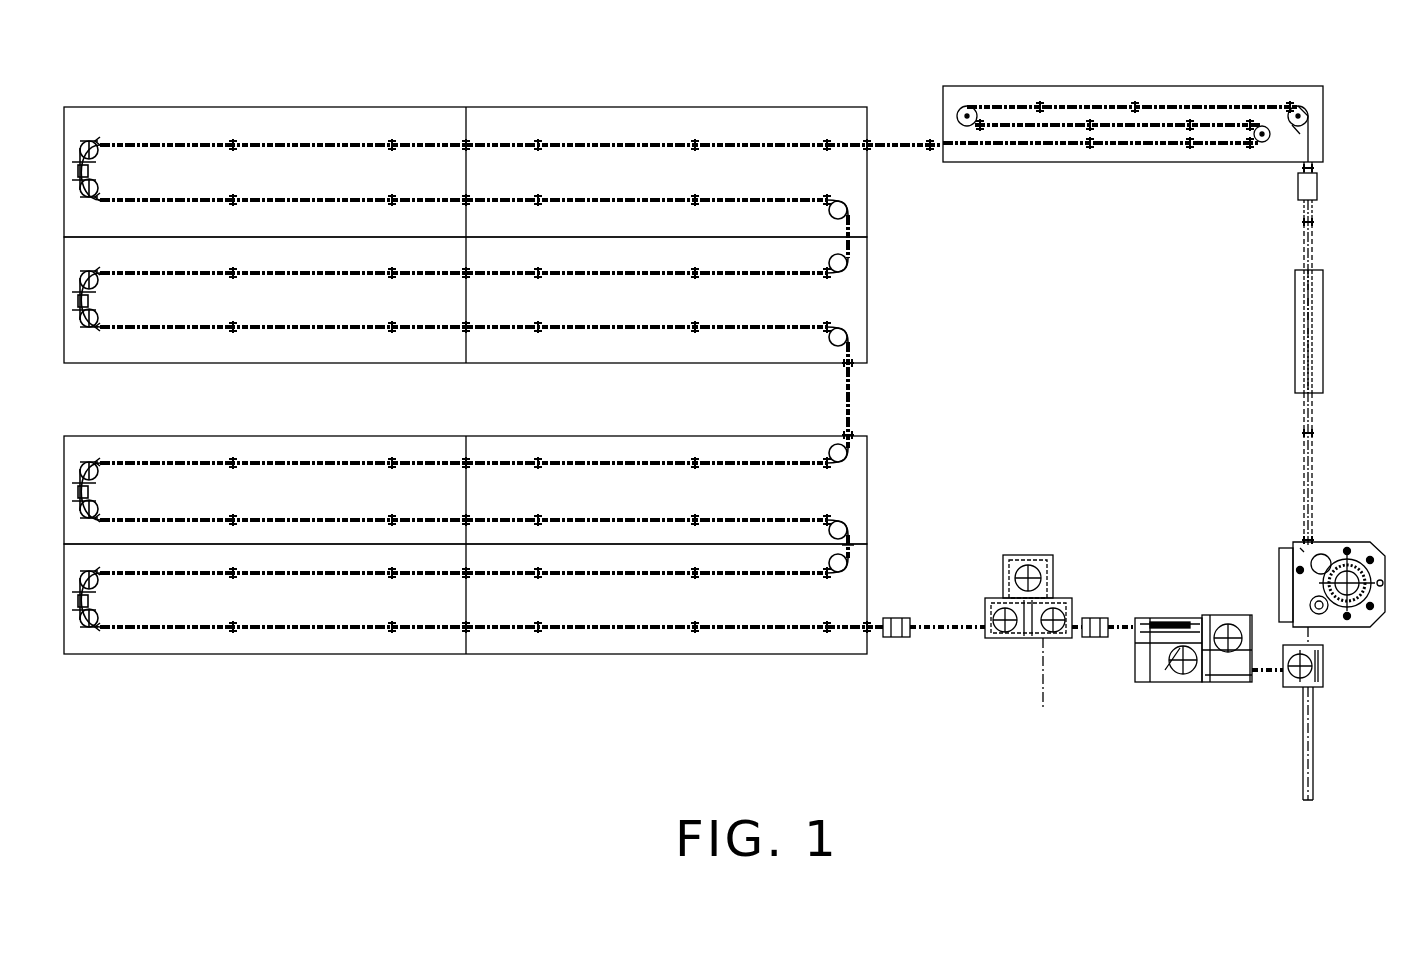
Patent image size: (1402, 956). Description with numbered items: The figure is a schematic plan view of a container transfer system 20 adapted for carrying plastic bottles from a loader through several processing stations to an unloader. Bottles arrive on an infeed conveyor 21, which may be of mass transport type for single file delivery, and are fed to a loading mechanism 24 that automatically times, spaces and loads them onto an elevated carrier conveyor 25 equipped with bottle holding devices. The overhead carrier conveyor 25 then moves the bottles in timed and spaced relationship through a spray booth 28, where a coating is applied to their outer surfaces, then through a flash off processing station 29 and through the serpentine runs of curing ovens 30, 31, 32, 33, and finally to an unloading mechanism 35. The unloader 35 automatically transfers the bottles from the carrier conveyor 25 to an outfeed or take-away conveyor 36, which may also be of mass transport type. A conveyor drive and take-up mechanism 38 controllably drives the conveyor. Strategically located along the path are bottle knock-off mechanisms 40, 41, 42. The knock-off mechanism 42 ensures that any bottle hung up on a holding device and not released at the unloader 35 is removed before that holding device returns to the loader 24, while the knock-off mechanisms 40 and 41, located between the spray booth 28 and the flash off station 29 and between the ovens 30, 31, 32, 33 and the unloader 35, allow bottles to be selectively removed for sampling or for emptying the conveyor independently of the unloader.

The container transfer system 20 is at (197, 81).
The infeed conveyor 21 is at (1303, 752).
The loading mechanism 24 is at (1378, 545).
The carrier conveyor 25 is at (1303, 470).
The spray booth 28 is at (1295, 330).
The flash off processing station 29 is at (1075, 86).
The curing oven 30 is at (535, 107).
The curing oven 31 is at (367, 363).
The curing oven 32 is at (598, 436).
The curing oven 33 is at (574, 655).
The unloading mechanism 35 is at (1040, 555).
The outfeed conveyor 36 is at (1040, 690).
The conveyor drive and take-up mechanism 38 is at (1185, 682).
The bottle knock-off mechanism 40 is at (1298, 187).
The bottle knock-off mechanism 41 is at (893, 637).
The bottle knock-off mechanism 42 is at (1098, 618).